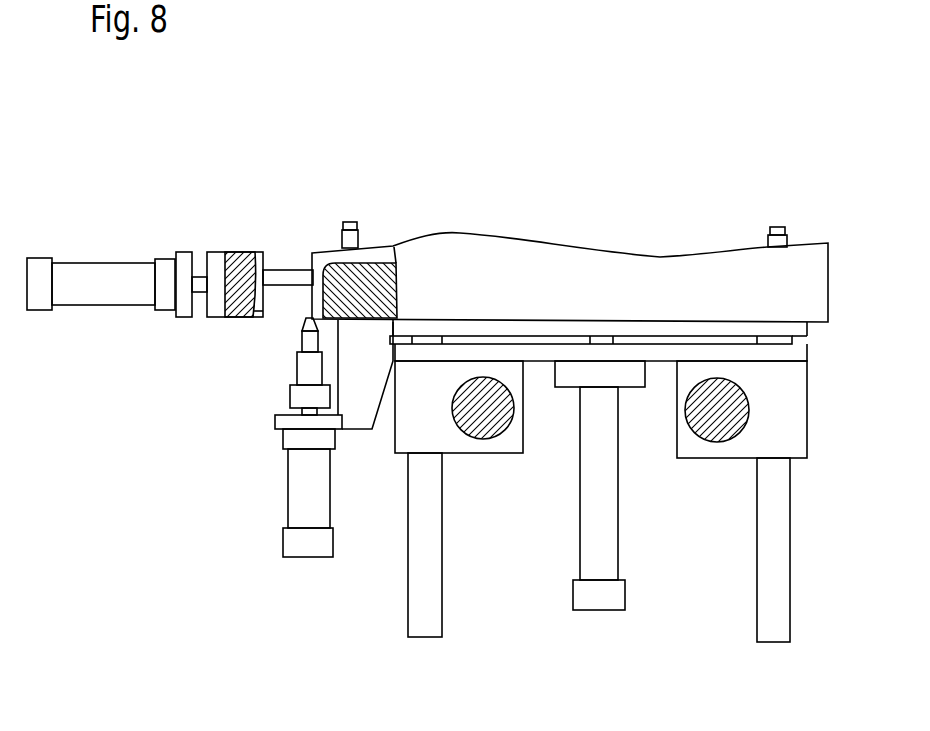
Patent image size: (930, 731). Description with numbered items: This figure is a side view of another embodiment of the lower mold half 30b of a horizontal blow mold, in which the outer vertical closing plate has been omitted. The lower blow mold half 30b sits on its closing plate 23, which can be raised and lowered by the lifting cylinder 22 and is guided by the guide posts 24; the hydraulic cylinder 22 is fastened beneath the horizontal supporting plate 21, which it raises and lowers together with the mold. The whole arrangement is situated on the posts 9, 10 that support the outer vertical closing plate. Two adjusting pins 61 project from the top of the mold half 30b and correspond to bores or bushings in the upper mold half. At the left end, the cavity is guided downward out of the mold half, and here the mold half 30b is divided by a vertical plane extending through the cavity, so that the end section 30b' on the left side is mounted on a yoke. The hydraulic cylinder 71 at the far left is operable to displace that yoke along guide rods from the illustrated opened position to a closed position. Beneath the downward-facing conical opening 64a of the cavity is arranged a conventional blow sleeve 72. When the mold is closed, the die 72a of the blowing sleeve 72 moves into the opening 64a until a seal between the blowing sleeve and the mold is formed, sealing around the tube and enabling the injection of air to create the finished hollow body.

The hydraulic cylinder 71 is at (78, 272).
The end section 30b' is at (225, 210).
The lower mold half 30b is at (570, 216).
The adjusting pins 61 is at (349, 222).
The lower horizontal closing plate 23 is at (689, 330).
The horizontal supporting plate 21 is at (501, 355).
The conical opening 64a is at (255, 318).
The die 72a is at (305, 317).
The blow sleeve 72 is at (296, 375).
The post 9 is at (483, 410).
The post 10 is at (717, 410).
The hydraulic cylinder 22 is at (587, 593).
The guide posts 24 is at (420, 573).